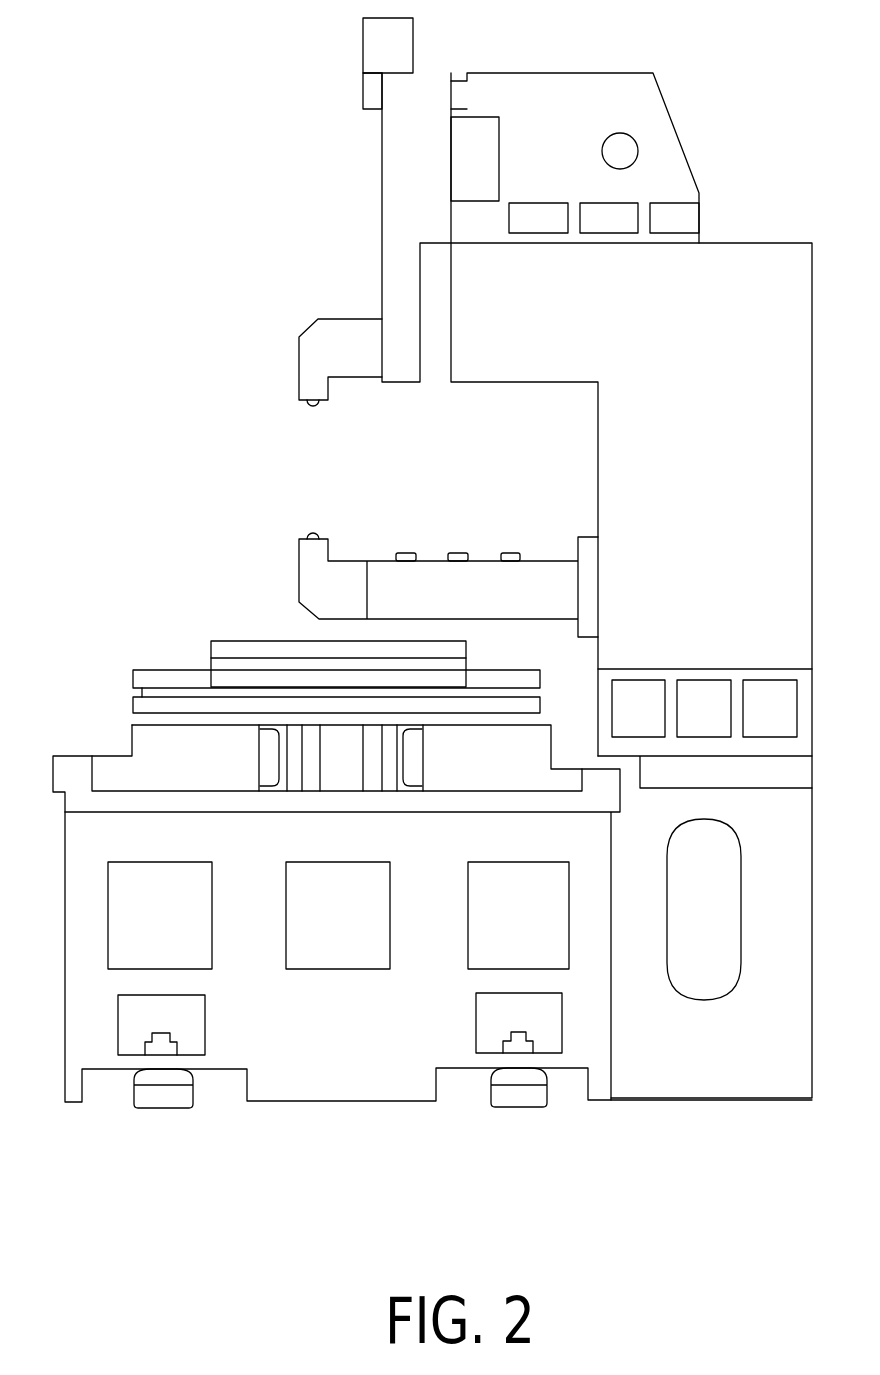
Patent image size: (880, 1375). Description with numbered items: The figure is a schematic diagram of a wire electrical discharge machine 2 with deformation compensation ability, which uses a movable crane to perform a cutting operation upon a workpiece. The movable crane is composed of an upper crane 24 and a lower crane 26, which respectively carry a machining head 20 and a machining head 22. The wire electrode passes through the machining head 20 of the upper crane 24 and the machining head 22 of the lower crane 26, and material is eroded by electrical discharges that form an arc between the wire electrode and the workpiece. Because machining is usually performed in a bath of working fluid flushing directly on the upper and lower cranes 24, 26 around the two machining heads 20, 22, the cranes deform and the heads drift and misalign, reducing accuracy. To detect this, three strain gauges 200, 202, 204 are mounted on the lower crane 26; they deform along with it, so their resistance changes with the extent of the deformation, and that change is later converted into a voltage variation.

The testing apparatus 2 is at (121, 148).
The machining head 20 is at (310, 405).
The machining head 22 is at (310, 535).
The upper crane 24 is at (322, 335).
The lower crane 26 is at (395, 595).
The strain gauge 200 is at (516, 553).
The strain gauge 202 is at (455, 553).
The strain gauge 204 is at (403, 552).